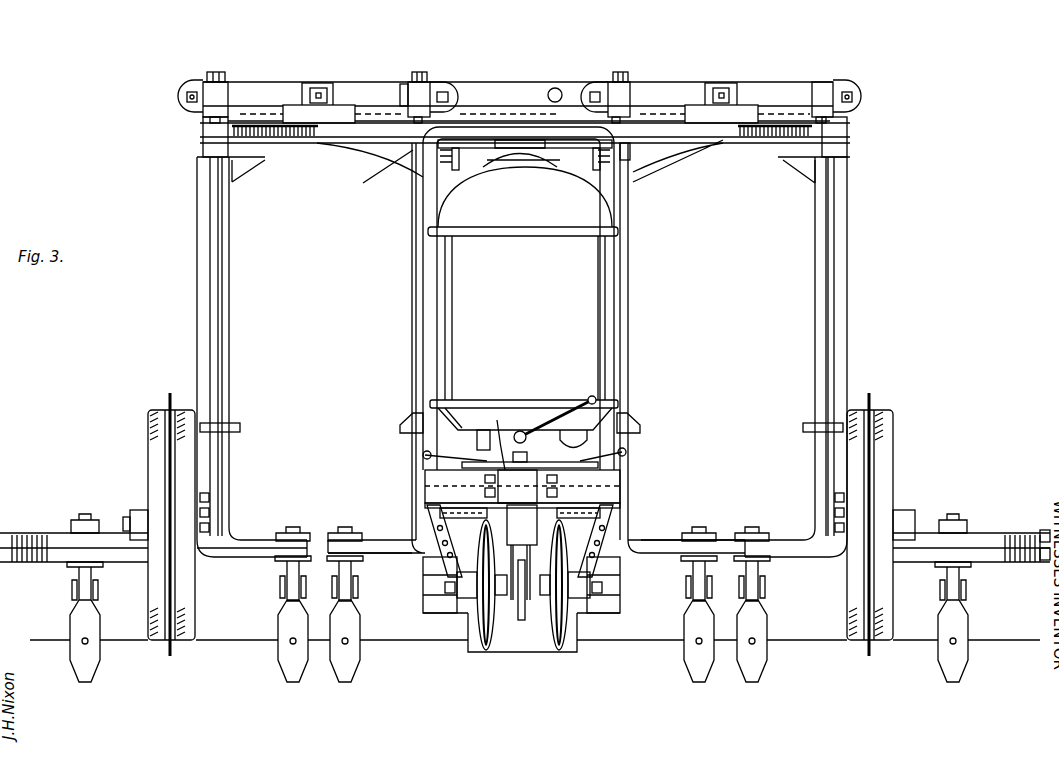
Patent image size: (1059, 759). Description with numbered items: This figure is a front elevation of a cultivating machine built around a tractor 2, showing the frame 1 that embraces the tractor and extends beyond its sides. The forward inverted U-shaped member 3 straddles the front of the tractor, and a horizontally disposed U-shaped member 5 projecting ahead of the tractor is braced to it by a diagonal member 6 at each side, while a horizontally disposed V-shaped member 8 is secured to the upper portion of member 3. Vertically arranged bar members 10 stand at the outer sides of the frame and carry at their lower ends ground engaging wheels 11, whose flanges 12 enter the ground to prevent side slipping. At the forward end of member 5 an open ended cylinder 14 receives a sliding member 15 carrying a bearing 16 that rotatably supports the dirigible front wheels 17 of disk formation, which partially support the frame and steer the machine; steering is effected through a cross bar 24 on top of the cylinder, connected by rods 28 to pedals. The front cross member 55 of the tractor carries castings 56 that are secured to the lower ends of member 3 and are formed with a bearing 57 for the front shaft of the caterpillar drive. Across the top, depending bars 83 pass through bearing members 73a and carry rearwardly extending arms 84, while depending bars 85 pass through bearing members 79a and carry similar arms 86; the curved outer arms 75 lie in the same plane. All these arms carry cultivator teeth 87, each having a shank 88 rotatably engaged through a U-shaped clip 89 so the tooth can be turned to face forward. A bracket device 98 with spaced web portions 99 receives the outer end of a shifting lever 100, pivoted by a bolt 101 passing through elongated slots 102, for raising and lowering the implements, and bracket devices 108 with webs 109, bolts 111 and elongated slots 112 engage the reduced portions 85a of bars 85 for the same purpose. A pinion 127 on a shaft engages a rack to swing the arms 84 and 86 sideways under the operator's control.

The frame 1 is at (524, 125).
The tractor 2 is at (523, 274).
The forward inverted U-shaped member 3 is at (612, 316).
The horizontally disposed U-shaped member 5 is at (445, 478).
The diagonal member 6 is at (636, 403).
The horizontally disposed V-shaped member 8 is at (310, 137).
The vertically arranged bar members 10 is at (200, 280).
The ground engaging wheels 11 is at (148, 418).
The flanges 12 is at (170, 393).
The open ended cylinder 14 is at (528, 470).
The member 15 is at (518, 620).
The bearing 16 is at (560, 650).
The dirigible front wheels 17 is at (482, 645).
The cross bar 24 is at (497, 422).
The rods 28 is at (626, 445).
The front cross member 55 is at (622, 475).
The castings 56 is at (600, 506).
The bearing 57 is at (440, 590).
The bearing members 73a is at (210, 151).
The arms 75 is at (44, 533).
The bearing members 79a is at (405, 162).
The depending bars 83 is at (224, 218).
The rearwardly extending arms 84 is at (240, 557).
The depending bars 85 is at (413, 236).
The reduced portions 85a is at (400, 90).
The rearwardly extending arms 86 is at (392, 553).
The cultivator teeth 87 is at (362, 664).
The shank 88 is at (352, 578).
The U-shaped clip 89 is at (362, 533).
The bracket device 98 is at (228, 82).
The web portions 99 is at (185, 90).
The shifting lever 100 is at (288, 106).
The bolt 101 is at (186, 101).
The elongated slots 102 is at (208, 82).
The bracket devices 108 is at (427, 82).
The webs 109 is at (452, 88).
The bolts 111 is at (590, 85).
The elongated slots 112 is at (602, 92).
The pinion 127 is at (318, 86).